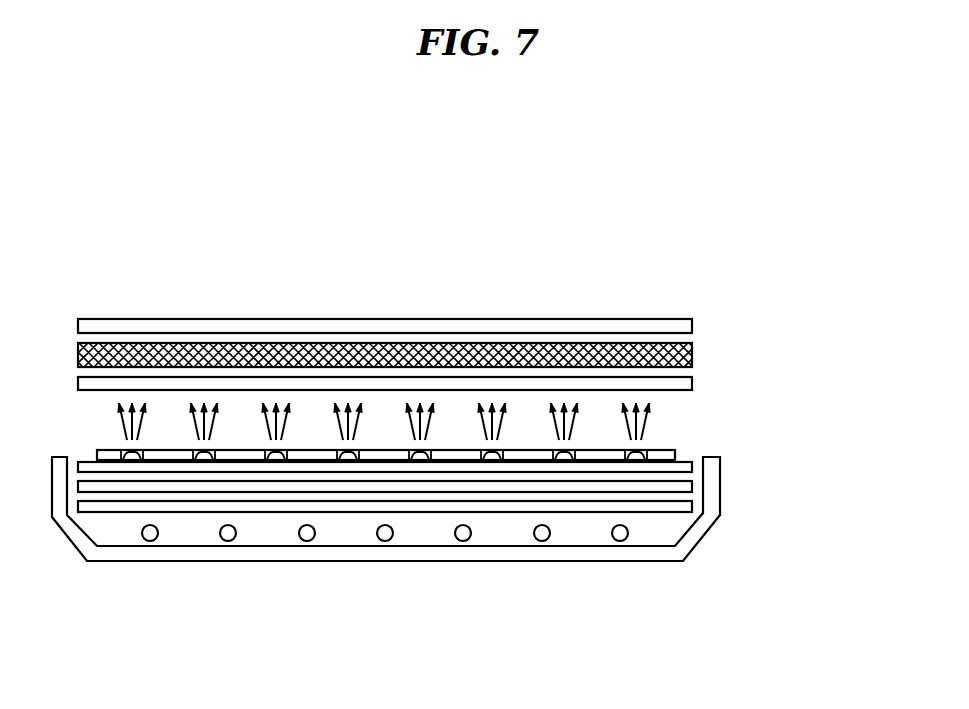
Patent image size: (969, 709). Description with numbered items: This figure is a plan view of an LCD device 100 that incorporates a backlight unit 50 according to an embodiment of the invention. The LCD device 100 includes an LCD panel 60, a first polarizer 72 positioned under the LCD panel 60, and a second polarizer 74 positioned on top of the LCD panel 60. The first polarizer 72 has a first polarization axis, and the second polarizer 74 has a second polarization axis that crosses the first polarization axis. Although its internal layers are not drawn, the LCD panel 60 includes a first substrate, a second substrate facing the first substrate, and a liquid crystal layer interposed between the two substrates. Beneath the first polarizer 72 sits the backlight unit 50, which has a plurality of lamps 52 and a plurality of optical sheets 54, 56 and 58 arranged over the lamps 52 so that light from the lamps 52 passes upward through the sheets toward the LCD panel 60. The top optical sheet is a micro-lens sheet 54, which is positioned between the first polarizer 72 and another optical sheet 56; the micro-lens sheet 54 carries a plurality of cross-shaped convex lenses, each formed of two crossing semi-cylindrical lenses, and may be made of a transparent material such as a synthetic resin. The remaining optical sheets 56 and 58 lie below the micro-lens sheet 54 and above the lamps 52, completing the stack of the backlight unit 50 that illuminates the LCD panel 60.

The LCD device 100 is at (390, 303).
The second polarizer 74 is at (692, 322).
The LCD panel 60 is at (692, 355).
The first polarizer 72 is at (692, 383).
The micro-lens sheet 54 is at (693, 456).
The optical sheet 56 is at (692, 487).
The optical sheet 58 is at (685, 507).
The lamps 52 is at (150, 541).
The backlight unit 50 is at (820, 415).